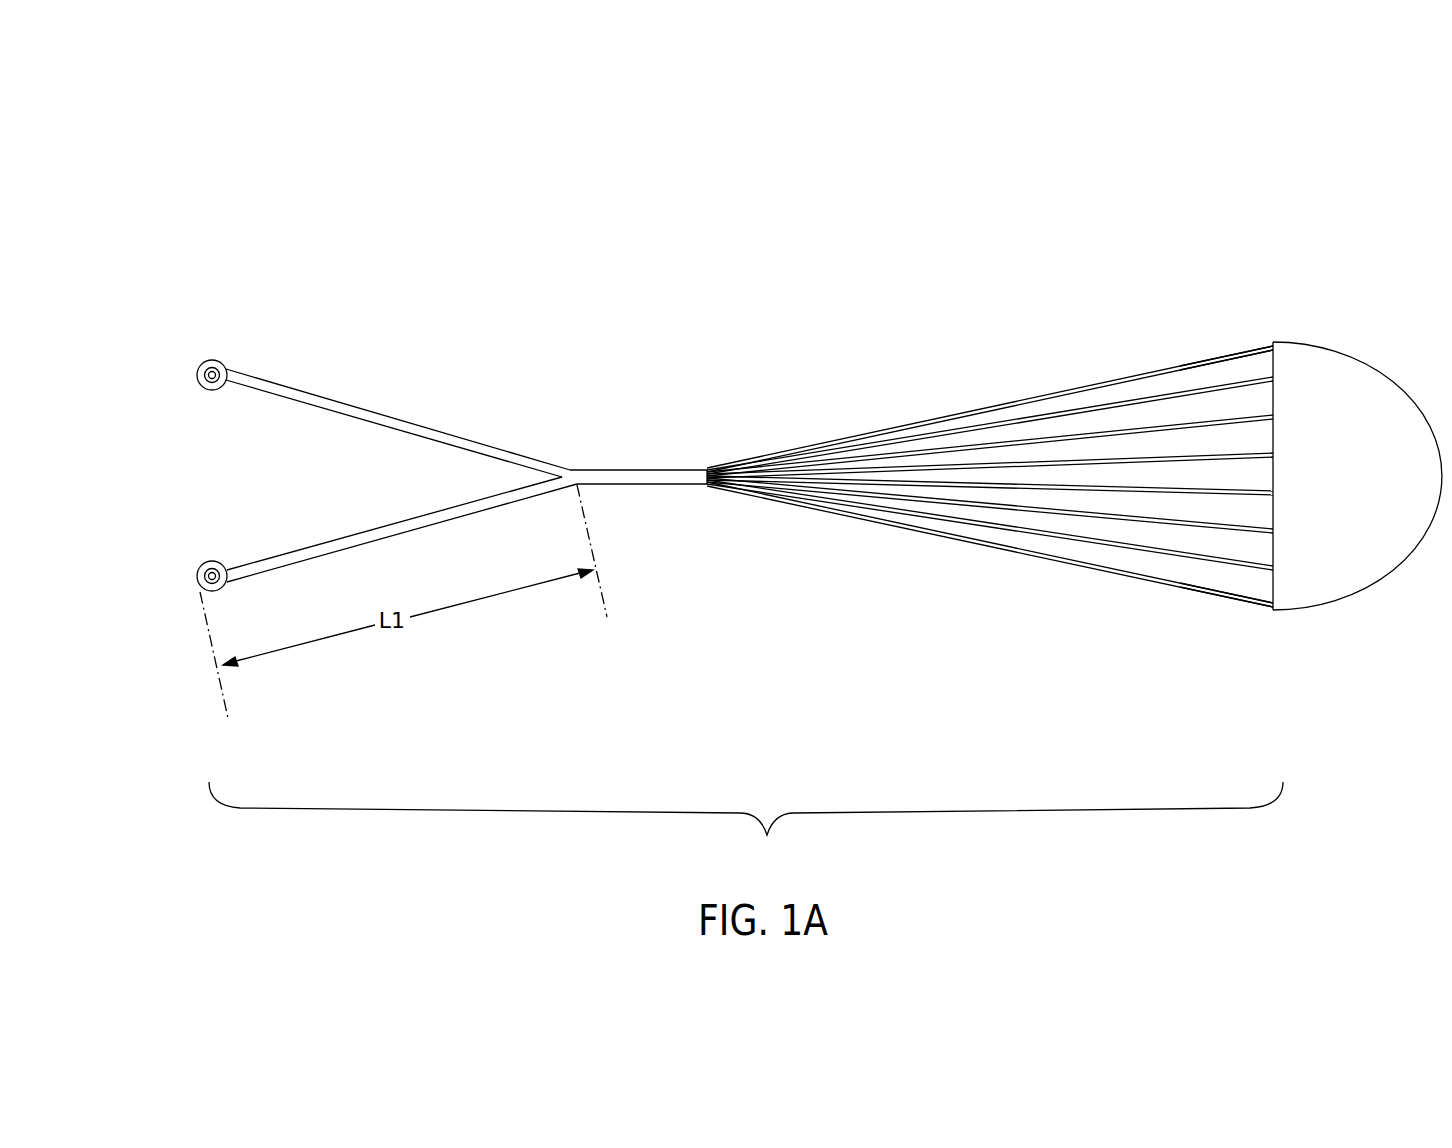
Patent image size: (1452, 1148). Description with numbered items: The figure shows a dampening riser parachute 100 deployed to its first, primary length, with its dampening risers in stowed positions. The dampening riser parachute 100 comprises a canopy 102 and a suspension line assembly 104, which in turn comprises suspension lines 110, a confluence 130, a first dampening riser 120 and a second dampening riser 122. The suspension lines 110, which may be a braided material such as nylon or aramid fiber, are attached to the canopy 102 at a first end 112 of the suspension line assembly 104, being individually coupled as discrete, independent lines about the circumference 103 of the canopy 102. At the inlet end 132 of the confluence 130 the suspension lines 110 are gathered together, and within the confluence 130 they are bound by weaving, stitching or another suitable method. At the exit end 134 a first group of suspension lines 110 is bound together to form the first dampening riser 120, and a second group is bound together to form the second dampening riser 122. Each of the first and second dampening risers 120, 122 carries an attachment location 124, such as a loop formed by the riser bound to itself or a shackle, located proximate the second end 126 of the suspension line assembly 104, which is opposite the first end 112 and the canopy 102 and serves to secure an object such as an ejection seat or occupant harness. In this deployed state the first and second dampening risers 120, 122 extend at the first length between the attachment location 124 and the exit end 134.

The dampening riser parachute 100 is at (1245, 165).
The canopy 102 is at (1320, 360).
The circumference 103 is at (1258, 357).
The suspension line assembly 104 is at (746, 825).
The suspension lines 110 is at (1062, 390).
The first end 112 is at (1261, 594).
The first dampening riser 120 is at (466, 446).
The second dampening riser 122 is at (330, 549).
The attachment location 124 is at (198, 368).
The second end 126 is at (185, 608).
The confluence 130 is at (702, 433).
The inlet end 132 is at (718, 500).
The exit end 134 is at (560, 453).